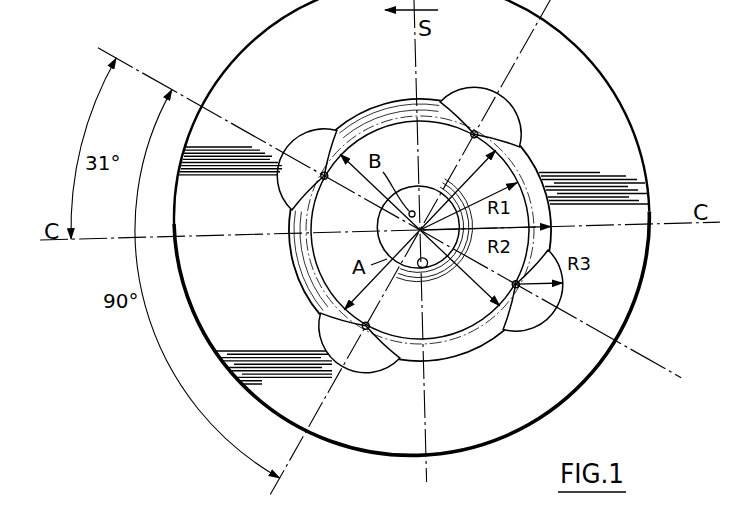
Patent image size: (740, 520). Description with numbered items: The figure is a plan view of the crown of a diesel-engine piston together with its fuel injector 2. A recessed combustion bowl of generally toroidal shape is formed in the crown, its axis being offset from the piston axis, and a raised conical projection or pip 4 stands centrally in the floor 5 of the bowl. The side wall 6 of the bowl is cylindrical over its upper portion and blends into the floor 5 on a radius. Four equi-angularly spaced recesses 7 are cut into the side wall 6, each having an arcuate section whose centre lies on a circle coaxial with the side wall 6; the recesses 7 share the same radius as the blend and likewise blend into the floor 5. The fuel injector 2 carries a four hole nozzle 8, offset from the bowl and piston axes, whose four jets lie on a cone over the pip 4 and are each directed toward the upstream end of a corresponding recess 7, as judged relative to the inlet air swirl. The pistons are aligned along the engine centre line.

The fuel injector 2 is at (142, 64).
The pip 4 is at (380, 226).
The floor of the bowl 5 is at (327, 260).
The side wall of the bowl 6 is at (529, 164).
The arcuate recesses 7 is at (300, 139).
The four hole nozzle 8 is at (425, 268).